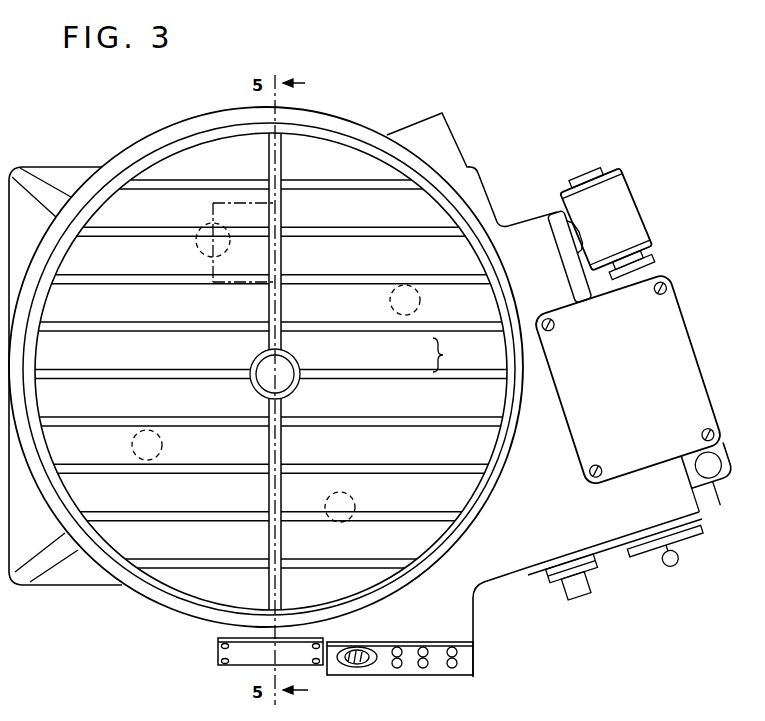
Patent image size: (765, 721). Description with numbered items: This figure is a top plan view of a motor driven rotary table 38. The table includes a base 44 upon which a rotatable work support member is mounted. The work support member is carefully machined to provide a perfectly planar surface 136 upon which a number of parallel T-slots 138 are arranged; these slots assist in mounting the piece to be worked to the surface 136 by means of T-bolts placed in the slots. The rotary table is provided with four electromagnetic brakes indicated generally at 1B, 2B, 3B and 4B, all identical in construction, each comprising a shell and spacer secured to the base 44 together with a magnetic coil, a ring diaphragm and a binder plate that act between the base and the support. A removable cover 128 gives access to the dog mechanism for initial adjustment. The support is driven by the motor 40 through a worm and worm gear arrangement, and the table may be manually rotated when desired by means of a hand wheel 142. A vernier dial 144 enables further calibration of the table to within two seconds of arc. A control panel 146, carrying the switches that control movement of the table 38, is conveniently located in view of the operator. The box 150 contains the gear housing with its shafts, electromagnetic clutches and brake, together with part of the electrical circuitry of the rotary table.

The rotary table 38 is at (396, 99).
The planar surface 136 is at (350, 205).
The T-slots 138 is at (454, 355).
The motor 40 is at (627, 208).
The box 150 is at (665, 330).
The base 44 is at (503, 548).
The hand wheel 142 is at (670, 568).
The vernier dial 144 is at (583, 602).
The control panel 146 is at (467, 672).
The removable cover 128 is at (240, 660).
The brake 1B is at (197, 247).
The brake 2B is at (472, 311).
The brake 3B is at (132, 444).
The brake 4B is at (404, 501).